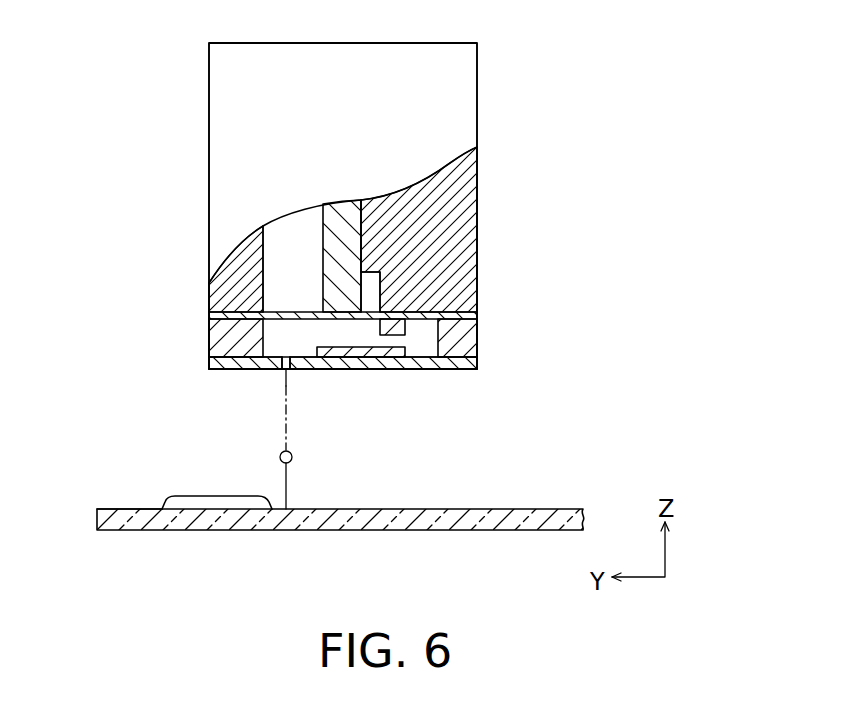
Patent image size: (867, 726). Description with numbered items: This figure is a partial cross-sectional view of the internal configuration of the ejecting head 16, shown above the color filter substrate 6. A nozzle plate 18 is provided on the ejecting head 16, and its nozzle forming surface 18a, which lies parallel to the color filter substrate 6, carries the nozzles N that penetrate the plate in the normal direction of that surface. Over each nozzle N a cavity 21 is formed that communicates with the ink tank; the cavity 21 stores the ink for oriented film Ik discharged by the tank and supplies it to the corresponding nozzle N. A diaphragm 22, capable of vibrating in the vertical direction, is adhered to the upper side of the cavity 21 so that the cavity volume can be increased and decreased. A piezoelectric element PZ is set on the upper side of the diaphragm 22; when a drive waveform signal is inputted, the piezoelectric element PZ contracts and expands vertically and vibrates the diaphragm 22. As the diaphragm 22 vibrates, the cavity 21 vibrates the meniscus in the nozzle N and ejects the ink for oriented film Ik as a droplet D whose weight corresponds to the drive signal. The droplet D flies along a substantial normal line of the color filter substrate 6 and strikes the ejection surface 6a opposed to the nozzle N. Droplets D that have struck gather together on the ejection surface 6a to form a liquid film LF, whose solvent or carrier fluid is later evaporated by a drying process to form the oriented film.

The ejecting head 16 is at (533, 138).
The piezoelectric element PZ is at (328, 253).
The diaphragm 22 is at (477, 316).
The cavity 21 is at (307, 335).
The ink for oriented film Ik is at (429, 350).
The nozzle plate 18 is at (477, 364).
The nozzle forming surface 18a is at (458, 370).
The nozzle N is at (288, 372).
The droplet D is at (280, 457).
The liquid film LF is at (195, 496).
The color filter substrate 6 is at (97, 513).
The ejection surface 6a is at (118, 508).